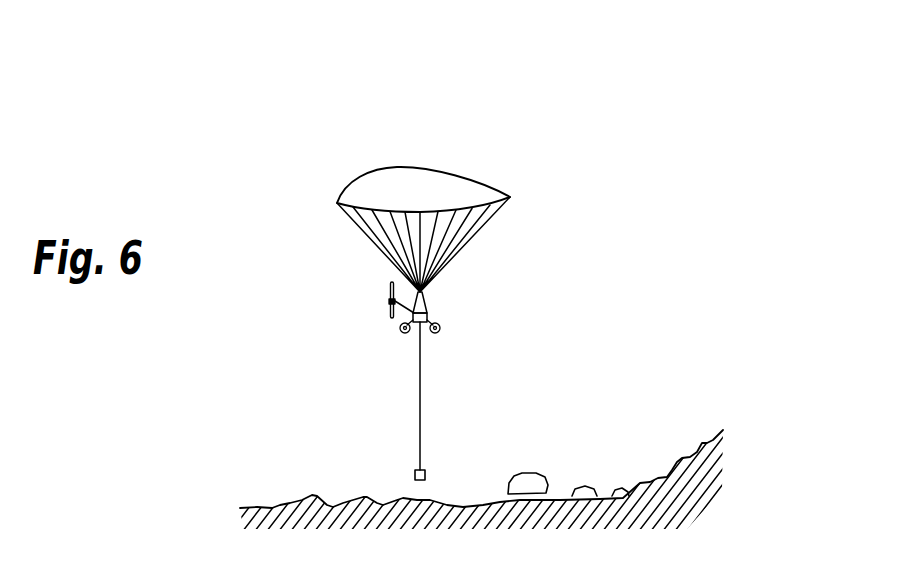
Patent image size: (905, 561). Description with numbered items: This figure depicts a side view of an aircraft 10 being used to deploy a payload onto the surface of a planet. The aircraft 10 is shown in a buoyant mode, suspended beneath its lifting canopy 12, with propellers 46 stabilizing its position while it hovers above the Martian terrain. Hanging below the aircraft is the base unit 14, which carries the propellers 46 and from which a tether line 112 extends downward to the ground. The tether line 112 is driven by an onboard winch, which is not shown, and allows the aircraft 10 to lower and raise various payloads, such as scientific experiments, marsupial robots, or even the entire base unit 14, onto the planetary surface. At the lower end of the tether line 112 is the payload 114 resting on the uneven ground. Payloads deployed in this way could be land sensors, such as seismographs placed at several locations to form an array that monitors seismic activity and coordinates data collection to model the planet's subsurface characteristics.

The aircraft 10 is at (505, 243).
The canopy 12 is at (483, 177).
The base unit 14 is at (428, 313).
The propellers 46 is at (388, 303).
The tether line 112 is at (422, 367).
The ground anchor 114 is at (427, 475).